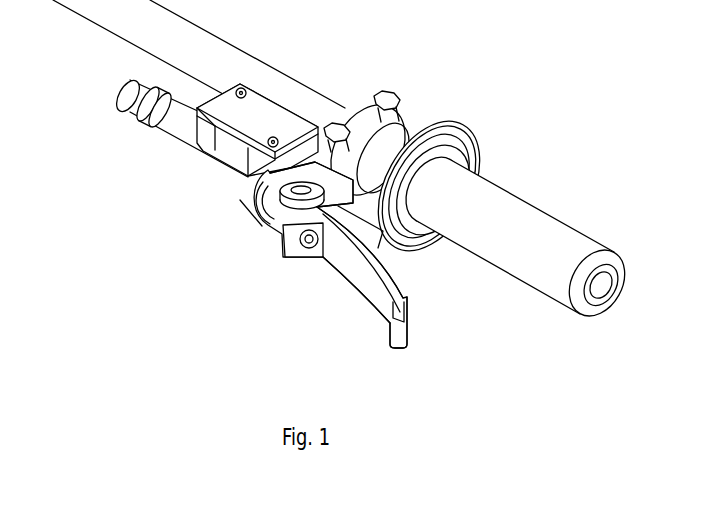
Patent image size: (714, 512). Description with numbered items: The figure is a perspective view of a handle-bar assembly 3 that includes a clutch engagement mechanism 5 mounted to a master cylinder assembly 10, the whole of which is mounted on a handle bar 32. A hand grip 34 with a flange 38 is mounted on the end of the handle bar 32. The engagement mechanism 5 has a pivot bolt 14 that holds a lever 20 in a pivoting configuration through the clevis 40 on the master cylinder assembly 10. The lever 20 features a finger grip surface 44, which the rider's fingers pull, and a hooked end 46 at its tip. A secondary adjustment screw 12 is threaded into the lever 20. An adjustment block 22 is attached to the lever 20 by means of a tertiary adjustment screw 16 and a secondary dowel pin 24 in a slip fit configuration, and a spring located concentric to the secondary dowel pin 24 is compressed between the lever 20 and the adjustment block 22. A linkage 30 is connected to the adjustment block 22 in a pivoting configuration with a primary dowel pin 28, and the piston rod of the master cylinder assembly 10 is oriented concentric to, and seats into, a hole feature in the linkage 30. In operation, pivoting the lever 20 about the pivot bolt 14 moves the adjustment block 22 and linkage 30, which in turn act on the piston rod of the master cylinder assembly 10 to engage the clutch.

The handle-bar assembly 3 is at (526, 348).
The engagement mechanism 5 is at (272, 233).
The master cylinder assembly 10 is at (278, 103).
The secondary adjustment screw 12 is at (247, 203).
The pivot bolt 14 is at (266, 229).
The tertiary adjustment screw 16 is at (311, 258).
The lever 20 is at (408, 345).
The adjustment block 22 is at (410, 206).
The secondary dowel pin 24 is at (376, 236).
The primary dowel pin 28 is at (402, 112).
The linkage 30 is at (458, 157).
The handle bar 32 is at (232, 45).
The hand grip 34 is at (607, 242).
The flange 38 is at (460, 127).
The clevis 40 is at (298, 250).
The finger grip surface 44 is at (349, 262).
The hooked end 46 is at (405, 311).